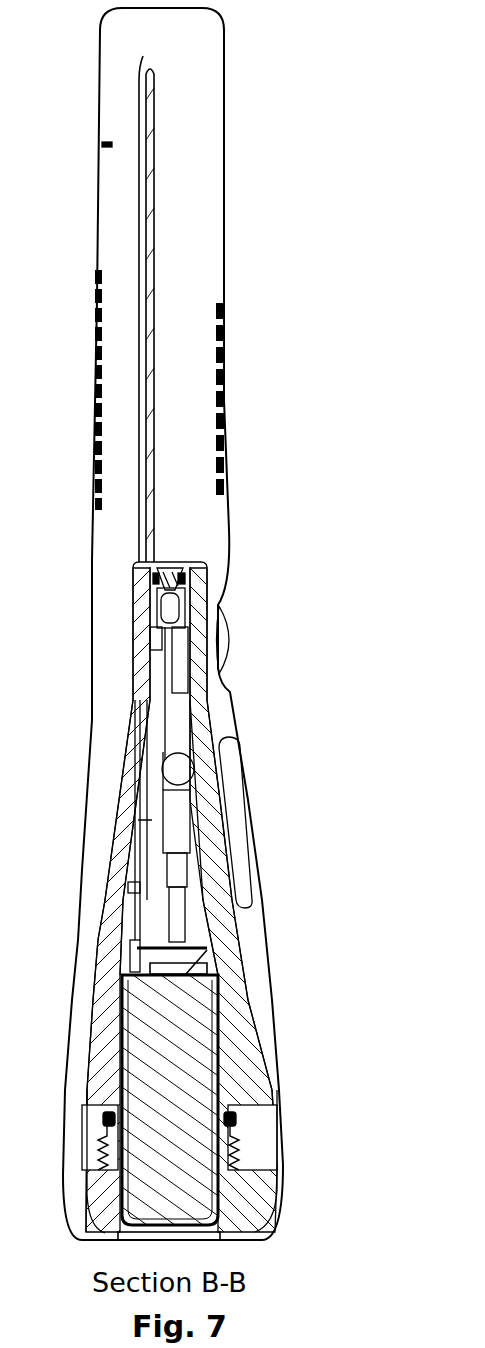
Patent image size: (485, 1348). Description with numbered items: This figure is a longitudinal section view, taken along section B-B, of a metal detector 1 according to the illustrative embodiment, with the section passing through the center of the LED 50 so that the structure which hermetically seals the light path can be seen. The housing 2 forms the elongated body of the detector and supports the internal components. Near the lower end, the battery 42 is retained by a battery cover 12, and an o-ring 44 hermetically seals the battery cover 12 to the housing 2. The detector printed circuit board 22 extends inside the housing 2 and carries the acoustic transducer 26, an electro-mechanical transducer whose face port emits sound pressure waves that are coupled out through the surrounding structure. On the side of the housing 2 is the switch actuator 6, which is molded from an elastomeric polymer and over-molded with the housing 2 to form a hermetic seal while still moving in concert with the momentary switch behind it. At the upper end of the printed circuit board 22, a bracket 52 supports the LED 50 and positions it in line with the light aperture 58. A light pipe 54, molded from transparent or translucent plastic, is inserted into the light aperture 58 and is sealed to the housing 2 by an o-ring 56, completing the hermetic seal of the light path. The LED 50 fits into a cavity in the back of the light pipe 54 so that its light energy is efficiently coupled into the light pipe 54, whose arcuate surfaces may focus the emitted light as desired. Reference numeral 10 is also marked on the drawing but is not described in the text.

The metal detector 1 is at (343, 376).
The housing 2 is at (97, 970).
The switch actuator 6 is at (236, 634).
The housing 10 is at (249, 810).
The battery cover 12 is at (270, 1208).
The detector printed circuit board 22 is at (131, 881).
The acoustic transducer 26 is at (231, 892).
The battery 42 is at (220, 1024).
The o-ring 44 is at (104, 1120).
The LED 50 is at (158, 600).
The bracket 52 is at (151, 630).
The light pipe 54 is at (138, 559).
The o-ring 56 is at (152, 571).
The light aperture 58 is at (186, 564).